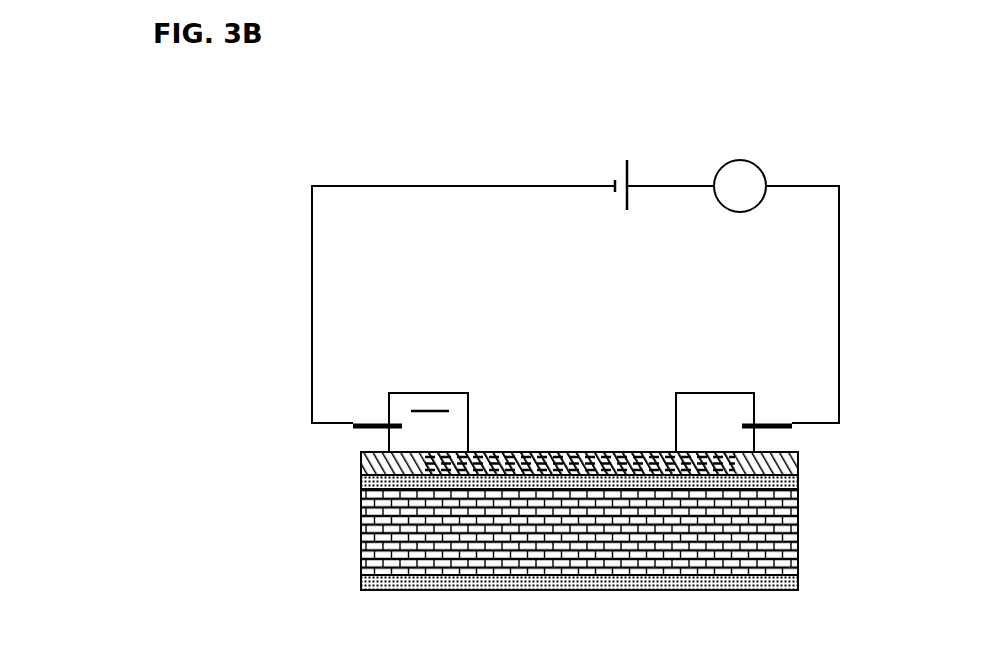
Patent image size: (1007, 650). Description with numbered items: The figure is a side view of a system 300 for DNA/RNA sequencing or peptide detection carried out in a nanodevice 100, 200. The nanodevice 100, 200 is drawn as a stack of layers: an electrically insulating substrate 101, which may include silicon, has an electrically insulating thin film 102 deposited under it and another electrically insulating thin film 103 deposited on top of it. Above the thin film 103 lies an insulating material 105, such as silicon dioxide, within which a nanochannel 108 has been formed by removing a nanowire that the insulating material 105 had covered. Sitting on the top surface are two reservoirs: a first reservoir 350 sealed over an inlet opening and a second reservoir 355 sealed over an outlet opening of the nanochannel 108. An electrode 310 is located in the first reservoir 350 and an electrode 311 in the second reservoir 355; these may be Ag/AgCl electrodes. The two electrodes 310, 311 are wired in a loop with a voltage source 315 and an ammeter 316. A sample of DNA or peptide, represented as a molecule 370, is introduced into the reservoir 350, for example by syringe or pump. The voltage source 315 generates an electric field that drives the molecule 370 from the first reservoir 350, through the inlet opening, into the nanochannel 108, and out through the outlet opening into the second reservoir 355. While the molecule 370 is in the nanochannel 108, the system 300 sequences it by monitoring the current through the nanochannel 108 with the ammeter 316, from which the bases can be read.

The system 300 is at (385, 100).
The voltage source 315 is at (658, 140).
The ammeter 316 is at (798, 145).
The reservoir 350 is at (412, 393).
The molecule 370 is at (441, 411).
The reservoir 355 is at (715, 393).
The electrode 310 is at (383, 432).
The electrode 311 is at (767, 432).
The nanochannel 108 is at (586, 452).
The insulating material 105 is at (798, 463).
The insulating thin film 103 is at (363, 483).
The insulating substrate 101 is at (363, 538).
The insulating thin film 102 is at (363, 583).
The nanodevice 100 is at (218, 452).
The nanodevice 200 is at (598, 435).